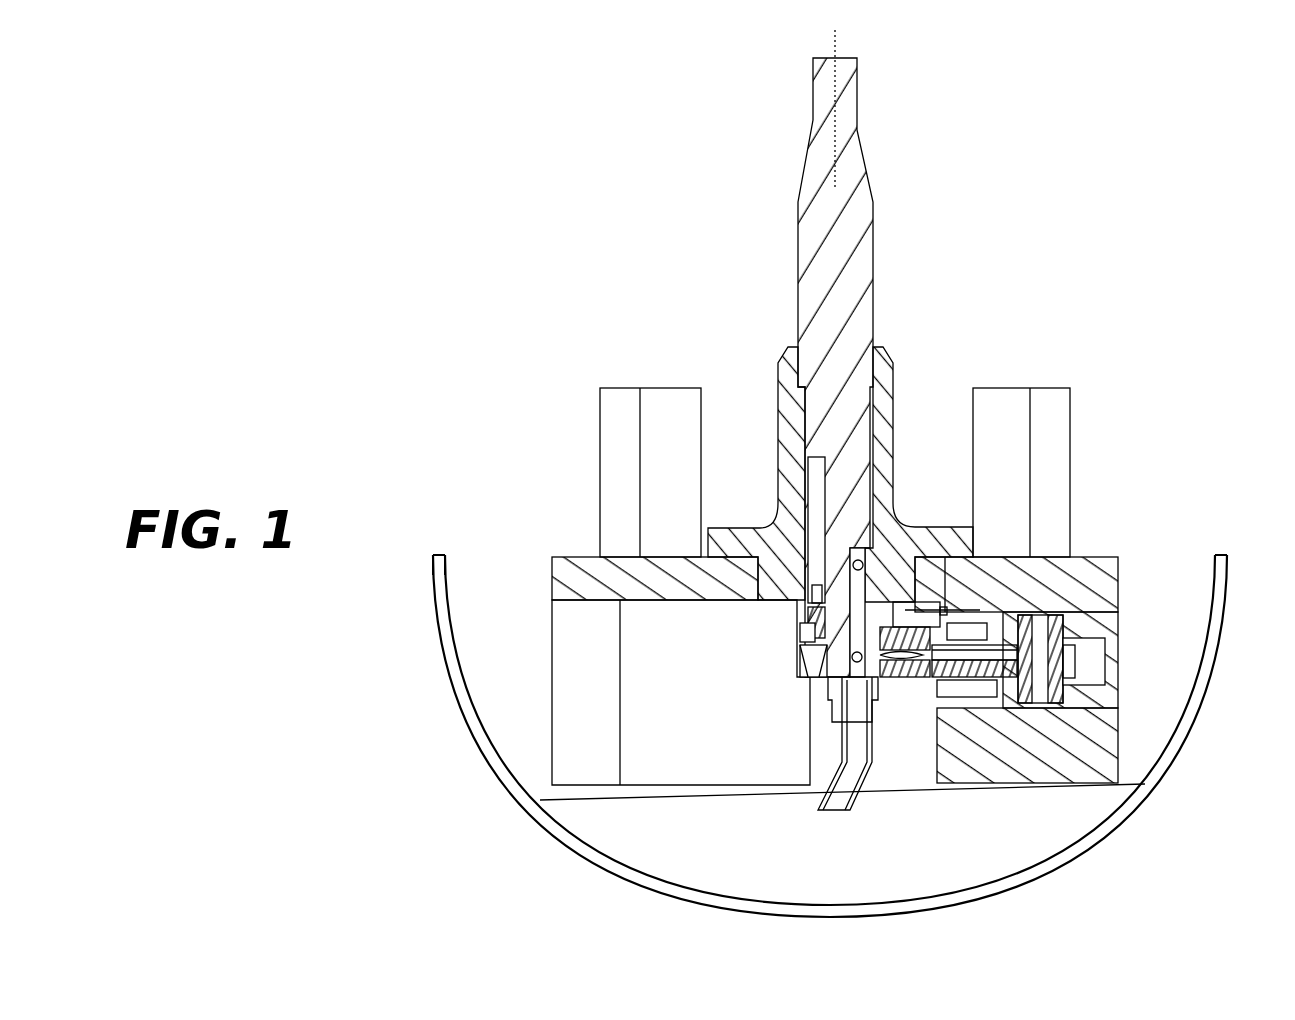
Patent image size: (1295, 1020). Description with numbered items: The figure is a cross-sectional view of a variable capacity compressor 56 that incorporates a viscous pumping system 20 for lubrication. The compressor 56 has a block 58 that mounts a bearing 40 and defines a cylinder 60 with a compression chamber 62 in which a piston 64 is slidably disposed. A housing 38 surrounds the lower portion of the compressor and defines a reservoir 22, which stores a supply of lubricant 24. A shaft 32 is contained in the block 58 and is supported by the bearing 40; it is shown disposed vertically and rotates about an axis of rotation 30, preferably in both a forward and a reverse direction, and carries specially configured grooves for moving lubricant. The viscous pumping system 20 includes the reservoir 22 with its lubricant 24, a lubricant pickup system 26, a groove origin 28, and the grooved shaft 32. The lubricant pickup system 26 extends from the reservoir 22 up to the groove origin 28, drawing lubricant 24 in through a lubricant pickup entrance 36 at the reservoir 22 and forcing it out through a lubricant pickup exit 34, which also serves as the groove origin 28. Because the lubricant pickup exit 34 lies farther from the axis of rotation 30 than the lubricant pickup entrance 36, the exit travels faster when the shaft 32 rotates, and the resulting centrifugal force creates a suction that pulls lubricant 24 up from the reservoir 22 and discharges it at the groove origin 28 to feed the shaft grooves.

The viscous pumping system 20 is at (738, 393).
The reservoir 22 is at (1100, 866).
The lubricant 24 is at (712, 876).
The lubricant pickup system 26 is at (815, 790).
The groove origin 28 is at (860, 556).
The axis of rotation 30 is at (838, 40).
The shaft 32 is at (856, 130).
The lubricant pickup exit 34 is at (863, 568).
The lubricant pickup entrance 36 is at (835, 802).
The housing 38 is at (435, 622).
The bearing 40 is at (886, 358).
The compressor 56 is at (548, 448).
The block 58 is at (565, 580).
The cylinder 60 is at (1172, 665).
The compression chamber 62 is at (1118, 695).
The piston 64 is at (1105, 630).